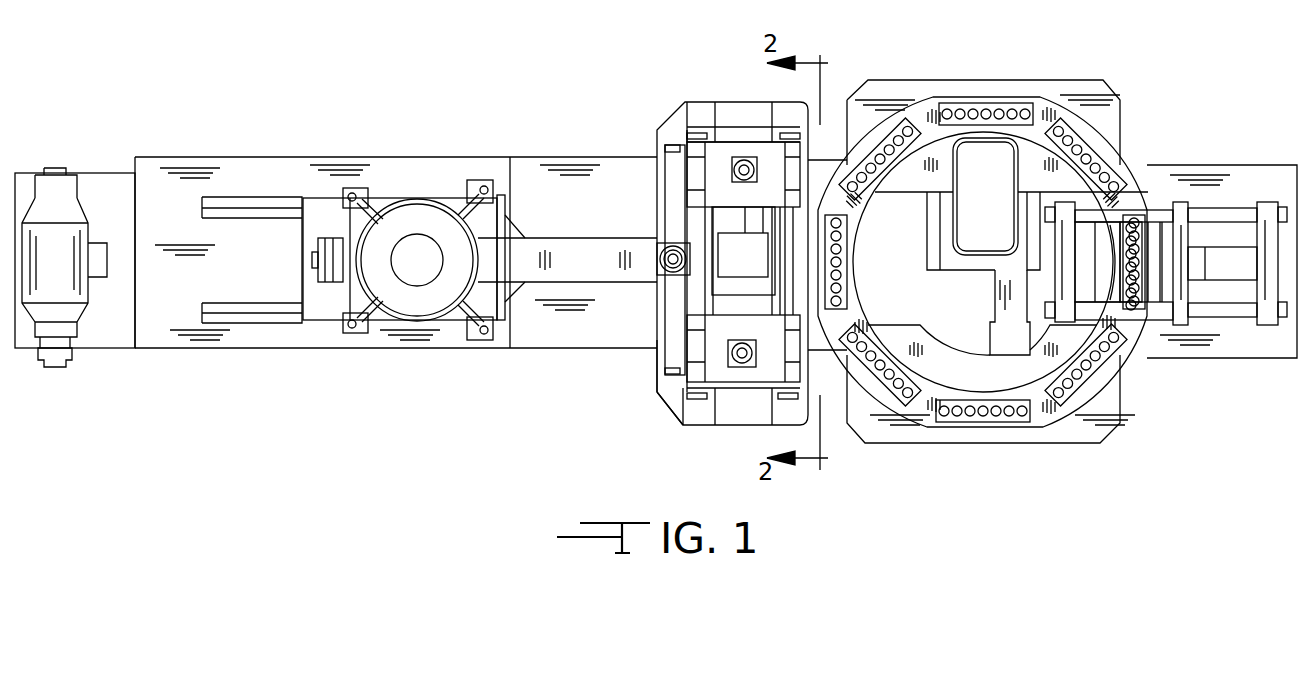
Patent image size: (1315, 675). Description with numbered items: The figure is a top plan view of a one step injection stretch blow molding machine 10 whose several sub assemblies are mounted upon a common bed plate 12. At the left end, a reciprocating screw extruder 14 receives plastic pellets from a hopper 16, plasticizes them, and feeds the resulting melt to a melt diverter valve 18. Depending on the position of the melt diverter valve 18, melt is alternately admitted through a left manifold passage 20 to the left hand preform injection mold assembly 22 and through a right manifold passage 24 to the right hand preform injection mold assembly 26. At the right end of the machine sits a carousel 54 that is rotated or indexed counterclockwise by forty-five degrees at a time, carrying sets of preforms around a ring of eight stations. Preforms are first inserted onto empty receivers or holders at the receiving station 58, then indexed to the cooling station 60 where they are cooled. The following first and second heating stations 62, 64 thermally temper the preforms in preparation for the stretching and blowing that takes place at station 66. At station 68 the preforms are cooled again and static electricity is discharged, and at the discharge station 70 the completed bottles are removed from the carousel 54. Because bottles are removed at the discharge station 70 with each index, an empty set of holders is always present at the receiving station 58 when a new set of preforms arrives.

The machine 10 is at (483, 392).
The bed plate 12 is at (428, 157).
The reciprocating screw extruder 14 is at (453, 193).
The hopper 16 is at (397, 223).
The melt diverter valve 18 is at (660, 250).
The left manifold passage 20 is at (672, 349).
The left hand preform injection mold assembly 22 is at (717, 363).
The right manifold passage 24 is at (672, 178).
The right hand preform injection mold assembly 26 is at (716, 160).
The carousel 54 is at (968, 92).
The receiving station 58 is at (858, 256).
The cooling station 60 is at (873, 376).
The first heating station 62 is at (983, 423).
The second heating station 64 is at (1120, 382).
The stretching and blowing station 66 is at (1145, 240).
The cooling and static discharge station 68 is at (1092, 145).
The discharge station 70 is at (1013, 105).